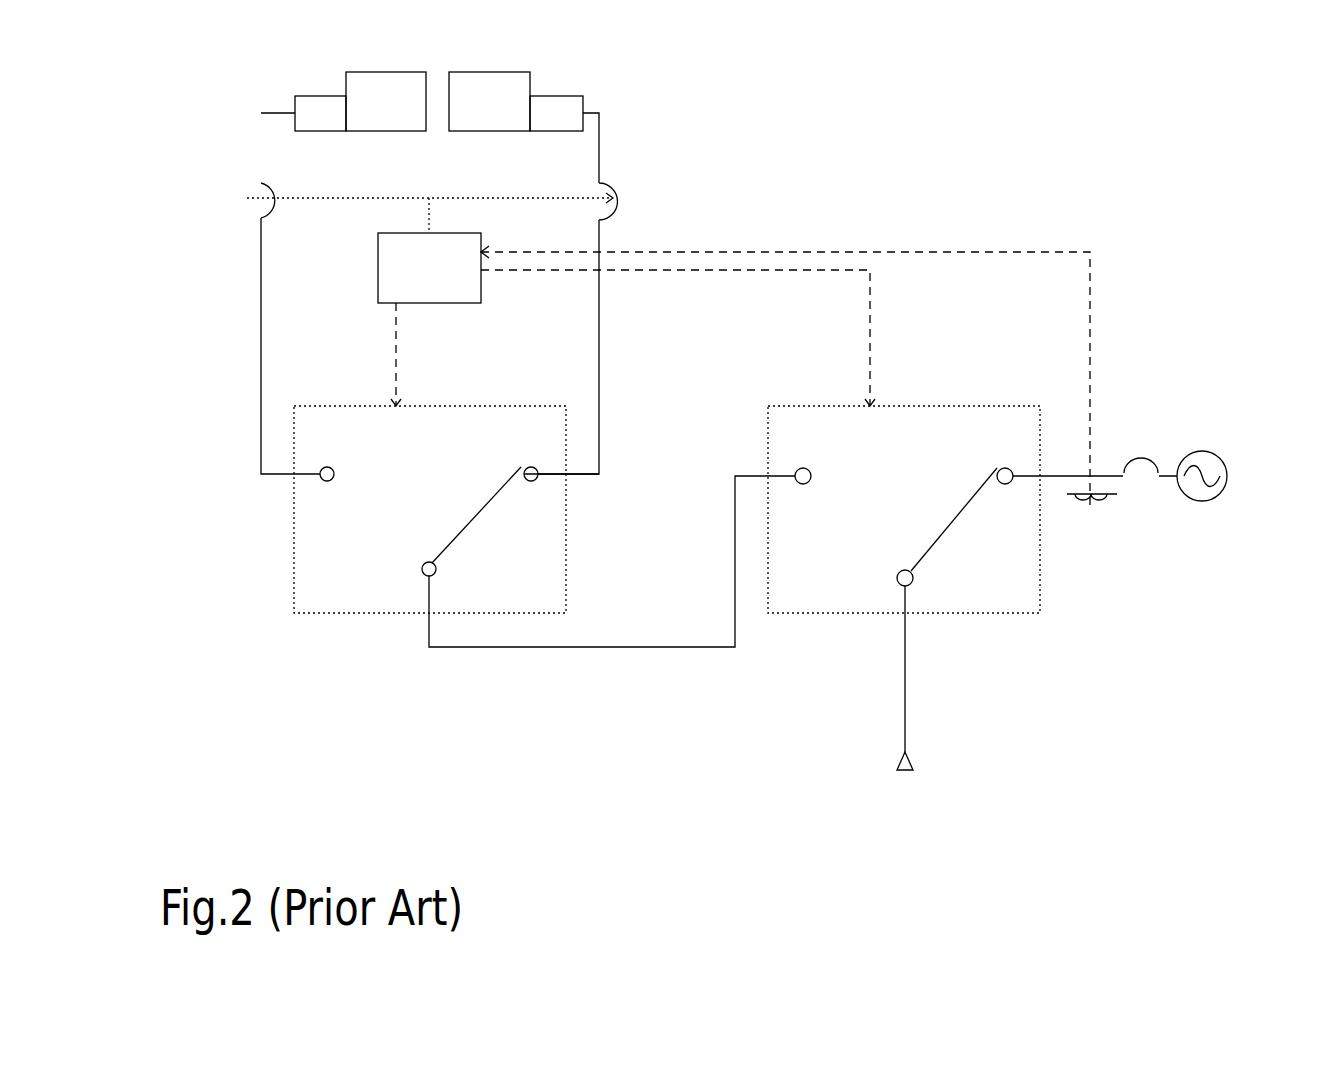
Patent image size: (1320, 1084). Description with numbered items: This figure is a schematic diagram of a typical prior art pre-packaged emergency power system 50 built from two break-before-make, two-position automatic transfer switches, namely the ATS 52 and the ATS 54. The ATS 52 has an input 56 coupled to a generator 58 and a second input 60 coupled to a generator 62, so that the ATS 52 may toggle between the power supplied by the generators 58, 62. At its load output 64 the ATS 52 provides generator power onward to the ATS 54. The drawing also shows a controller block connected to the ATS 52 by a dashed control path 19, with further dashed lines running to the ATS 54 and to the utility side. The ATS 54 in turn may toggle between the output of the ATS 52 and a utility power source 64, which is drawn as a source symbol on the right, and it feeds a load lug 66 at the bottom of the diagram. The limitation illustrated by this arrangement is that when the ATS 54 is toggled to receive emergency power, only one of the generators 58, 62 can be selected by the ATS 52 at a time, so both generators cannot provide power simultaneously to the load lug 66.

The pre-packaged system 50 is at (1123, 175).
The generator 58 is at (373, 126).
The generator 62 is at (476, 126).
The controller control signal 19 is at (398, 369).
The ATS 52 is at (463, 436).
The ATS 54 is at (947, 441).
The input 56 is at (333, 480).
The input 60 is at (524, 481).
The load output / utility power source 64 is at (436, 565).
The load lug 66 is at (906, 725).